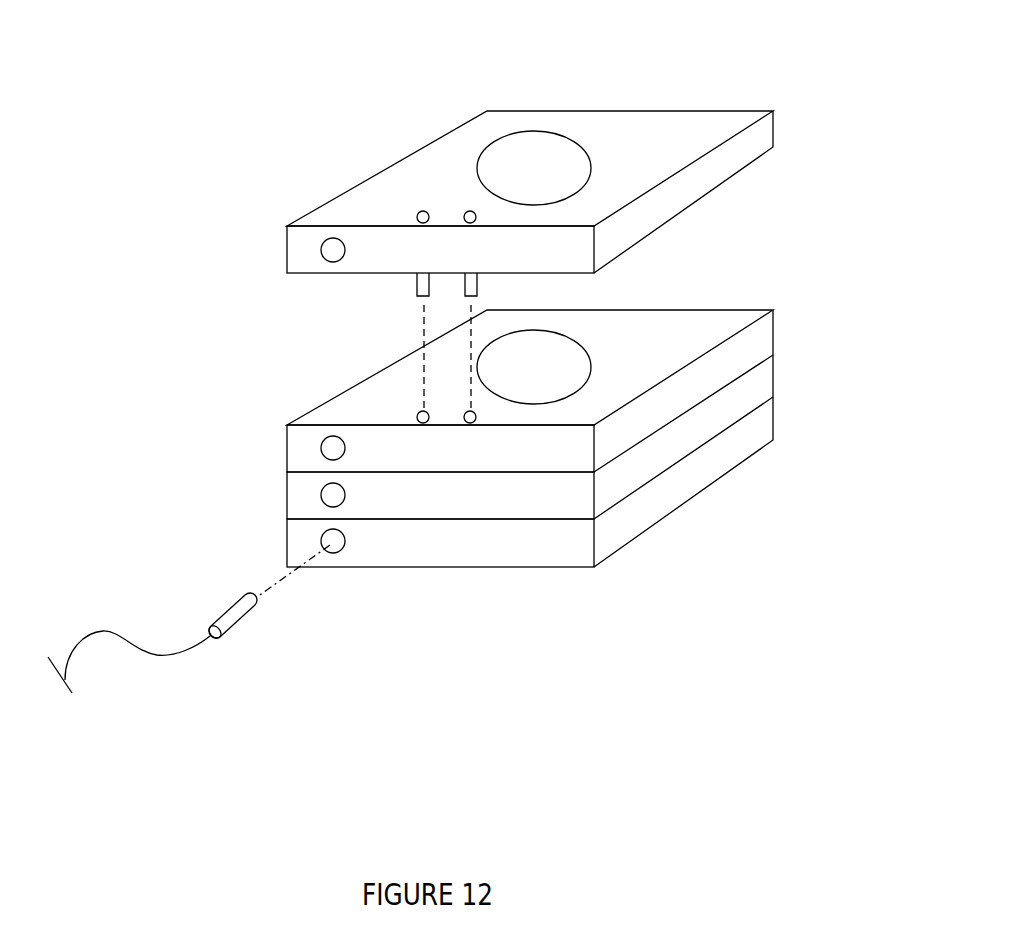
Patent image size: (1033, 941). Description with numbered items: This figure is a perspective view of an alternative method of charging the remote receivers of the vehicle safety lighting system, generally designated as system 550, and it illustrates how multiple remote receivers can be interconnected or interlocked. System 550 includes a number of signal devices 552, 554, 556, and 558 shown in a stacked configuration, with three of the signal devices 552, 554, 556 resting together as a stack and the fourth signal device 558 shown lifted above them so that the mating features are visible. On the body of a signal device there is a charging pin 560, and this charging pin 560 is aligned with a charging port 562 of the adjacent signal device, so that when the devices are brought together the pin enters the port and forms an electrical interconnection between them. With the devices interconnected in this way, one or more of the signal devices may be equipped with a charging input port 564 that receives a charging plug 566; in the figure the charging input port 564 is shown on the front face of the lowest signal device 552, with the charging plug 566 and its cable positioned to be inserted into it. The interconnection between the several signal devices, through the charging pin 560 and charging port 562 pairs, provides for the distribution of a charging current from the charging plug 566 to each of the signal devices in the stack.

The system 550 is at (273, 162).
The signal device 552 is at (762, 427).
The signal device 554 is at (762, 380).
The signal device 556 is at (762, 333).
The signal device 558 is at (738, 145).
The charging pin 560 is at (417, 297).
The charging port 562 is at (417, 413).
The charging input port 564 is at (324, 542).
The charging plug 566 is at (226, 610).